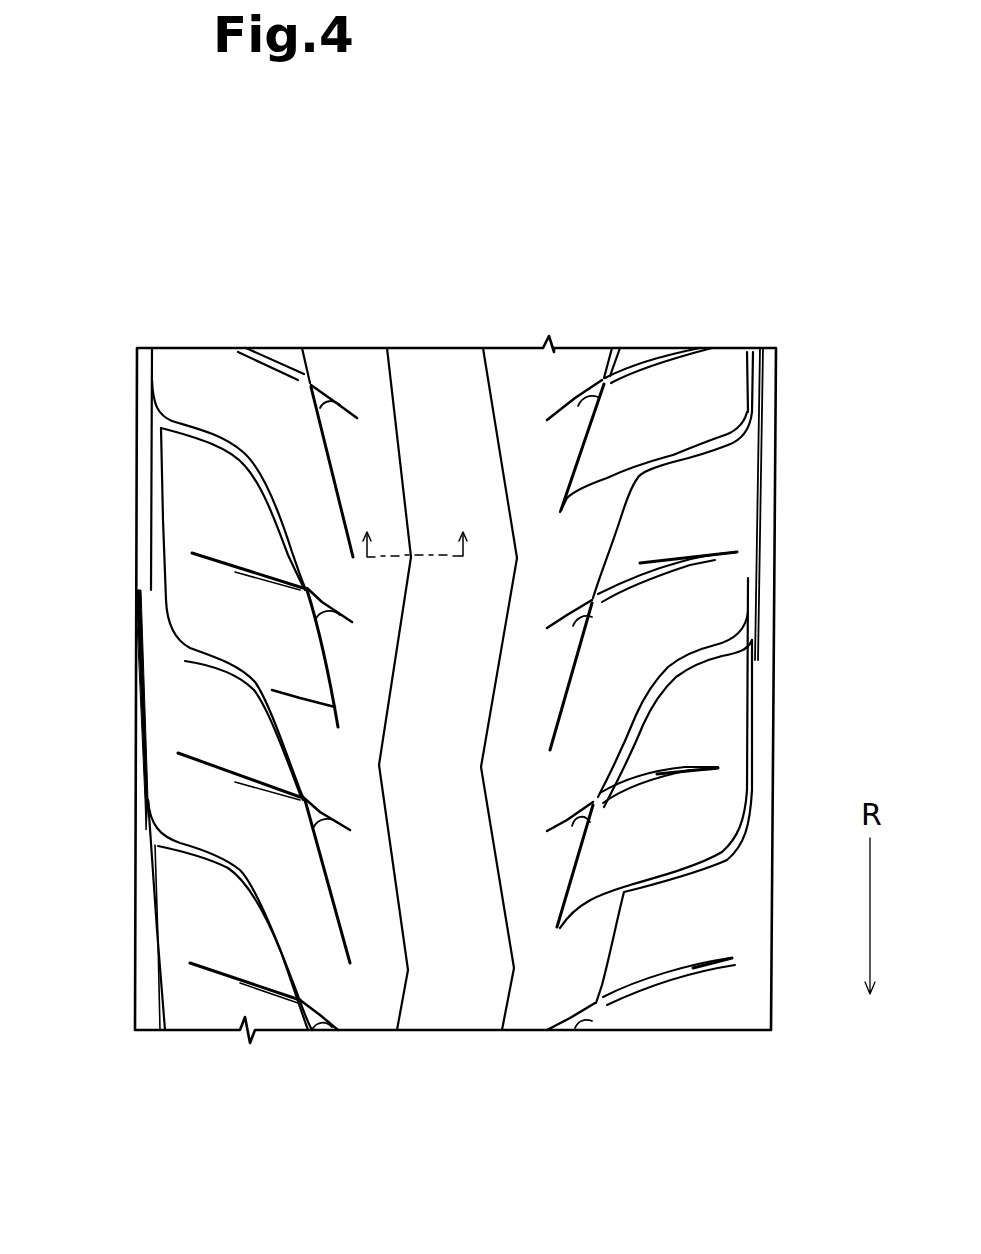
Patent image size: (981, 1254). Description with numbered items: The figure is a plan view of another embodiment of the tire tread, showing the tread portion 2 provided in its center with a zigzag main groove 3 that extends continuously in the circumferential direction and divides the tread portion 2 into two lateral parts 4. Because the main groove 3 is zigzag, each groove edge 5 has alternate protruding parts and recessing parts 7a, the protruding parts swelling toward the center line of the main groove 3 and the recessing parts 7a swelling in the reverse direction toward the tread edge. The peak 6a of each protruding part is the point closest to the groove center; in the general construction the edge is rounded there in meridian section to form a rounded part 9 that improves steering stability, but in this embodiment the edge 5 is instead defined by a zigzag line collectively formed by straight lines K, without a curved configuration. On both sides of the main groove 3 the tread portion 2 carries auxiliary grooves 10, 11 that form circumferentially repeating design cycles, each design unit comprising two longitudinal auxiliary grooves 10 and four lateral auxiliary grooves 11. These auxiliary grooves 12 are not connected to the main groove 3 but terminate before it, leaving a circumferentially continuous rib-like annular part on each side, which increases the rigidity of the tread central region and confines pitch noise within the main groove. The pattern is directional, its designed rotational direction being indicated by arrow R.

The tread portion 2 is at (536, 257).
The zigzag main groove 3 is at (455, 388).
The lateral parts 4 is at (282, 312).
The groove edge 5 is at (557, 273).
The peak of the protruding part 6a is at (467, 776).
The recessing part 7a is at (399, 758).
The rounded part 9 is at (428, 549).
The longitudinal auxiliary grooves 10 is at (288, 535).
The lateral auxiliary grooves 11 is at (212, 445).
The auxiliary grooves 12 is at (722, 473).